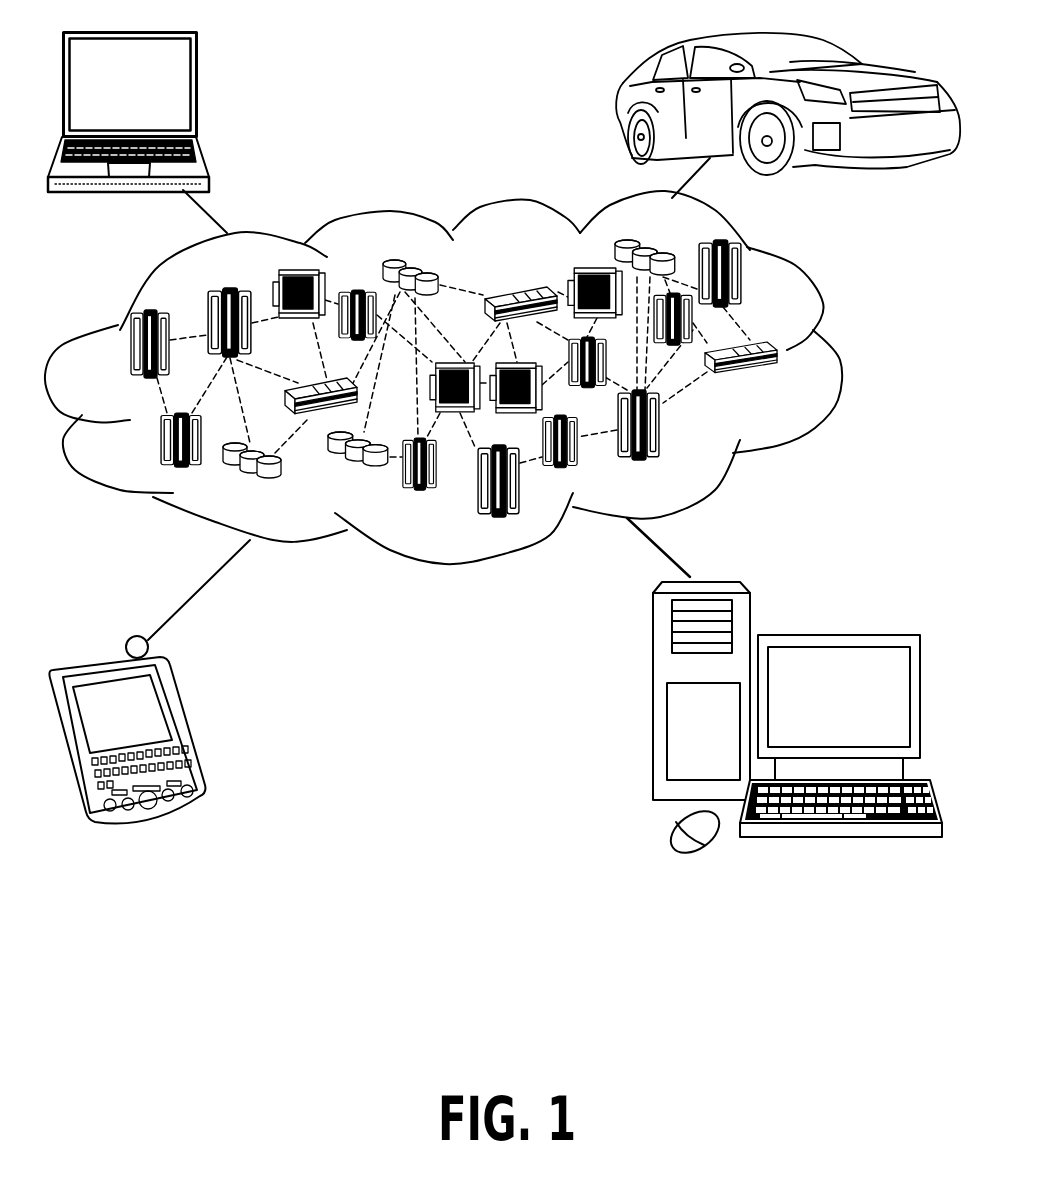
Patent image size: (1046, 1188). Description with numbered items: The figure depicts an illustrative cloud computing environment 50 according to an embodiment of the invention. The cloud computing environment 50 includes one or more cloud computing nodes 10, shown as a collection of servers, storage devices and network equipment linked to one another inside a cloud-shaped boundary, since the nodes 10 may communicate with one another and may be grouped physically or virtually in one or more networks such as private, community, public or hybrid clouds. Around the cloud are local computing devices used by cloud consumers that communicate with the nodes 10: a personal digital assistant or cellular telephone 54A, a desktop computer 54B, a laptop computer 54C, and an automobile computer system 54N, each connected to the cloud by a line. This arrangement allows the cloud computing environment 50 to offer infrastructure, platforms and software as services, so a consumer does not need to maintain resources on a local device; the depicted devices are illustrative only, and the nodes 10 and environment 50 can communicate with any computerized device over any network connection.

The cloud computing nodes 10 is at (502, 447).
The cloud computing environment 50 is at (838, 356).
The personal digital assistant or cellular telephone 54A is at (185, 725).
The desktop computer 54B is at (836, 633).
The laptop computer 54C is at (197, 90).
The automobile computer system 54N is at (623, 107).